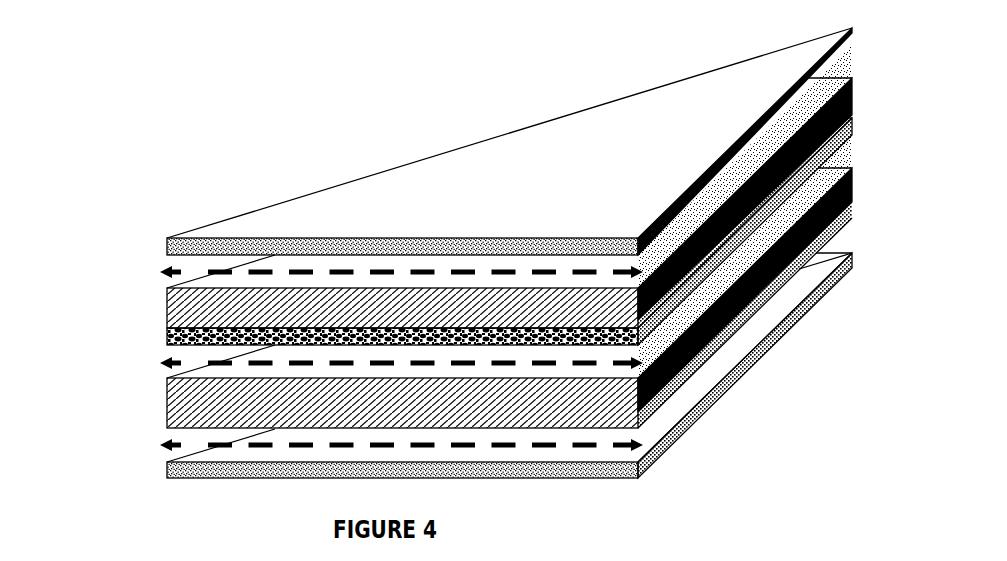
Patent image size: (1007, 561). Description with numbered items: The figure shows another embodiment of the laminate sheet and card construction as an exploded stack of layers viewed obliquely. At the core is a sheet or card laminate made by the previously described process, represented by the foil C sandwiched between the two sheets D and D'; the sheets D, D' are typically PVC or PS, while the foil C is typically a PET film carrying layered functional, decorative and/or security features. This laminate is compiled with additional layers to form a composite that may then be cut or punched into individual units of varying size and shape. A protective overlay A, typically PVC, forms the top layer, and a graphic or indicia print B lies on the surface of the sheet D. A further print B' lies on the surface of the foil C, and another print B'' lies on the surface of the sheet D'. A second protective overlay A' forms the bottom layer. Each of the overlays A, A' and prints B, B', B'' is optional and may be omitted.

The protective overlay A is at (467, 141).
The graphic or indicia print B is at (337, 264).
The sheet D is at (467, 186).
The foil C is at (159, 327).
The graphic or indicia print B' is at (345, 367).
The sheet D' is at (442, 281).
The graphic or indicia print B'' is at (354, 437).
The protective overlay A' is at (442, 367).